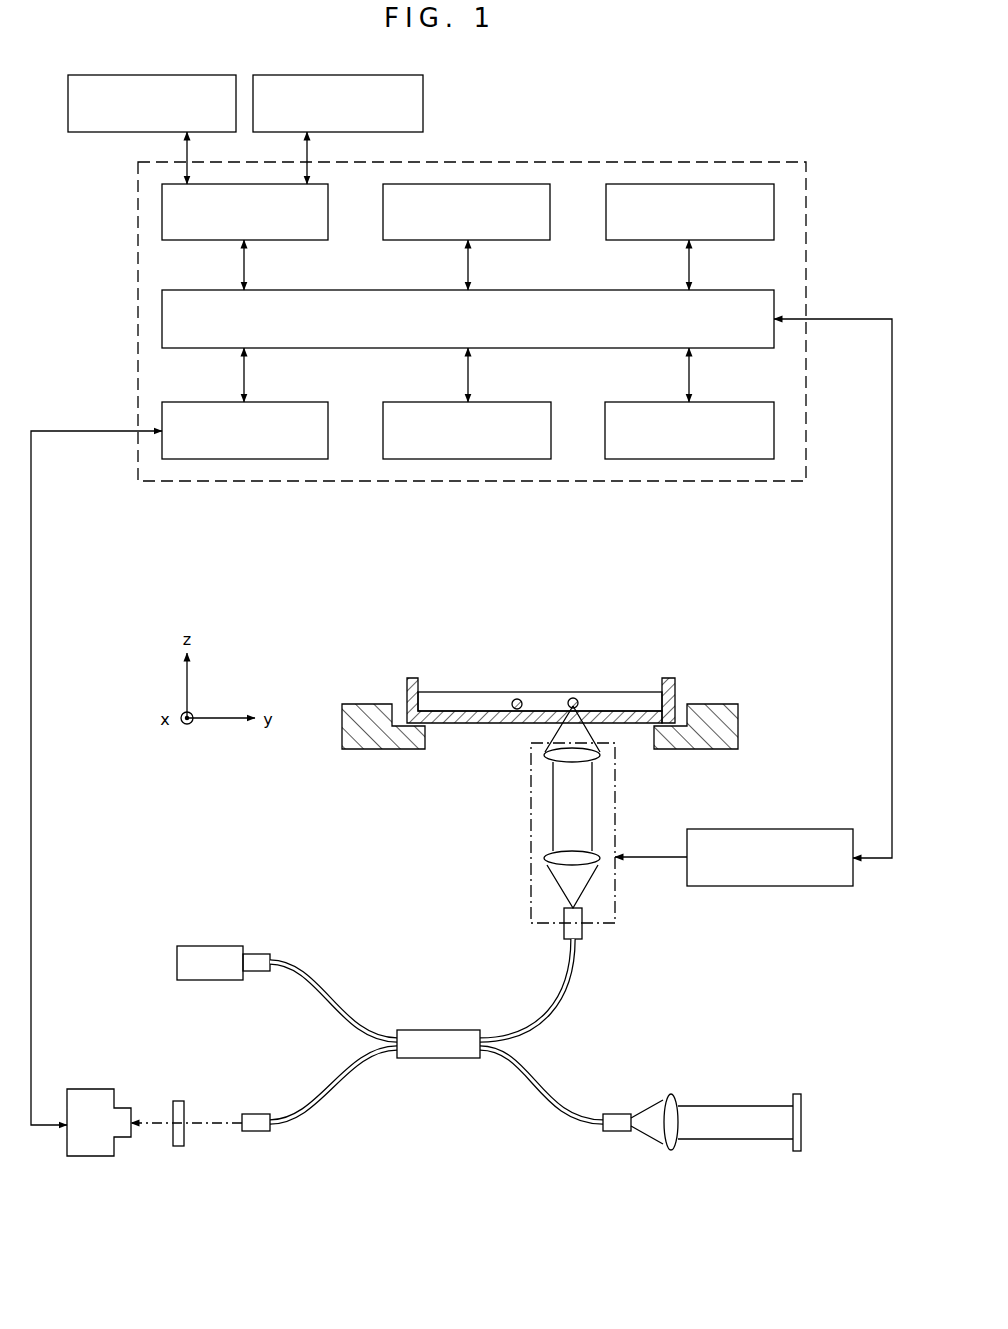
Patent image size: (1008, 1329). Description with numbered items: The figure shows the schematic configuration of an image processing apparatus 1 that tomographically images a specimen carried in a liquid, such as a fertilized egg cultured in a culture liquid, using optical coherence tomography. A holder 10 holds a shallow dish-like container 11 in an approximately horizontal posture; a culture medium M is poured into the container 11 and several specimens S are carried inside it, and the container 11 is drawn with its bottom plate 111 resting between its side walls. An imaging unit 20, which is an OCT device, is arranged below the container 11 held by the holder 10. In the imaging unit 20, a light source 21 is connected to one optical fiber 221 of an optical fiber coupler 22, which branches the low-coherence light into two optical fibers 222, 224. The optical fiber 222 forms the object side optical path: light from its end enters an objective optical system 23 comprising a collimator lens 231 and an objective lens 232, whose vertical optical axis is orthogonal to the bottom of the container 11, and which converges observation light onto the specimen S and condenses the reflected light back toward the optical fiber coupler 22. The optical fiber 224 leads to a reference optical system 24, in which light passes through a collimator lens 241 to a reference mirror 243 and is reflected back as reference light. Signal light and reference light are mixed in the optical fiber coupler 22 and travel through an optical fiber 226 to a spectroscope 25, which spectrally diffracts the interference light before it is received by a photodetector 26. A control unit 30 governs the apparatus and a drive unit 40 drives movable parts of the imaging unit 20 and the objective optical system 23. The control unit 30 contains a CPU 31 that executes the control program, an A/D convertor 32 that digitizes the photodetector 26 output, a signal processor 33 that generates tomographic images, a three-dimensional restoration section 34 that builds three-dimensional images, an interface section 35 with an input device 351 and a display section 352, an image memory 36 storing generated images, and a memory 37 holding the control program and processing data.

The image processing apparatus 1 is at (809, 98).
The holder 10 is at (370, 703).
The container 11 is at (541, 662).
The mounting plate of holder 111 is at (630, 710).
The culture medium M is at (475, 702).
The specimen S is at (572, 698).
The imaging unit 20 is at (362, 842).
The light source 21 is at (209, 946).
The optical fiber coupler 22 is at (443, 1030).
The optical fiber 221 is at (319, 977).
The optical fiber 222 is at (572, 988).
The optical fiber 224 is at (552, 1090).
The optical fiber 226 is at (342, 1082).
The objective optical system 23 is at (550, 822).
The collimator lens 231 is at (597, 862).
The objective lens 232 is at (552, 759).
The reference optical system 24 is at (716, 1125).
The collimator lens 241 is at (672, 1094).
The reference mirror 243 is at (793, 1098).
The spectroscope 25 is at (183, 1102).
The photodetector 26 is at (98, 1157).
The control unit 30 is at (807, 220).
The CPU 31 is at (162, 328).
The A/D convertor 32 is at (253, 460).
The signal processor 33 is at (462, 460).
The 3D restoration section 34 is at (677, 460).
The interface section 35 is at (162, 212).
The input device 351 is at (92, 133).
The display section 352 is at (423, 98).
The image memory 36 is at (510, 185).
The memory 37 is at (685, 185).
The drive unit 40 is at (770, 887).